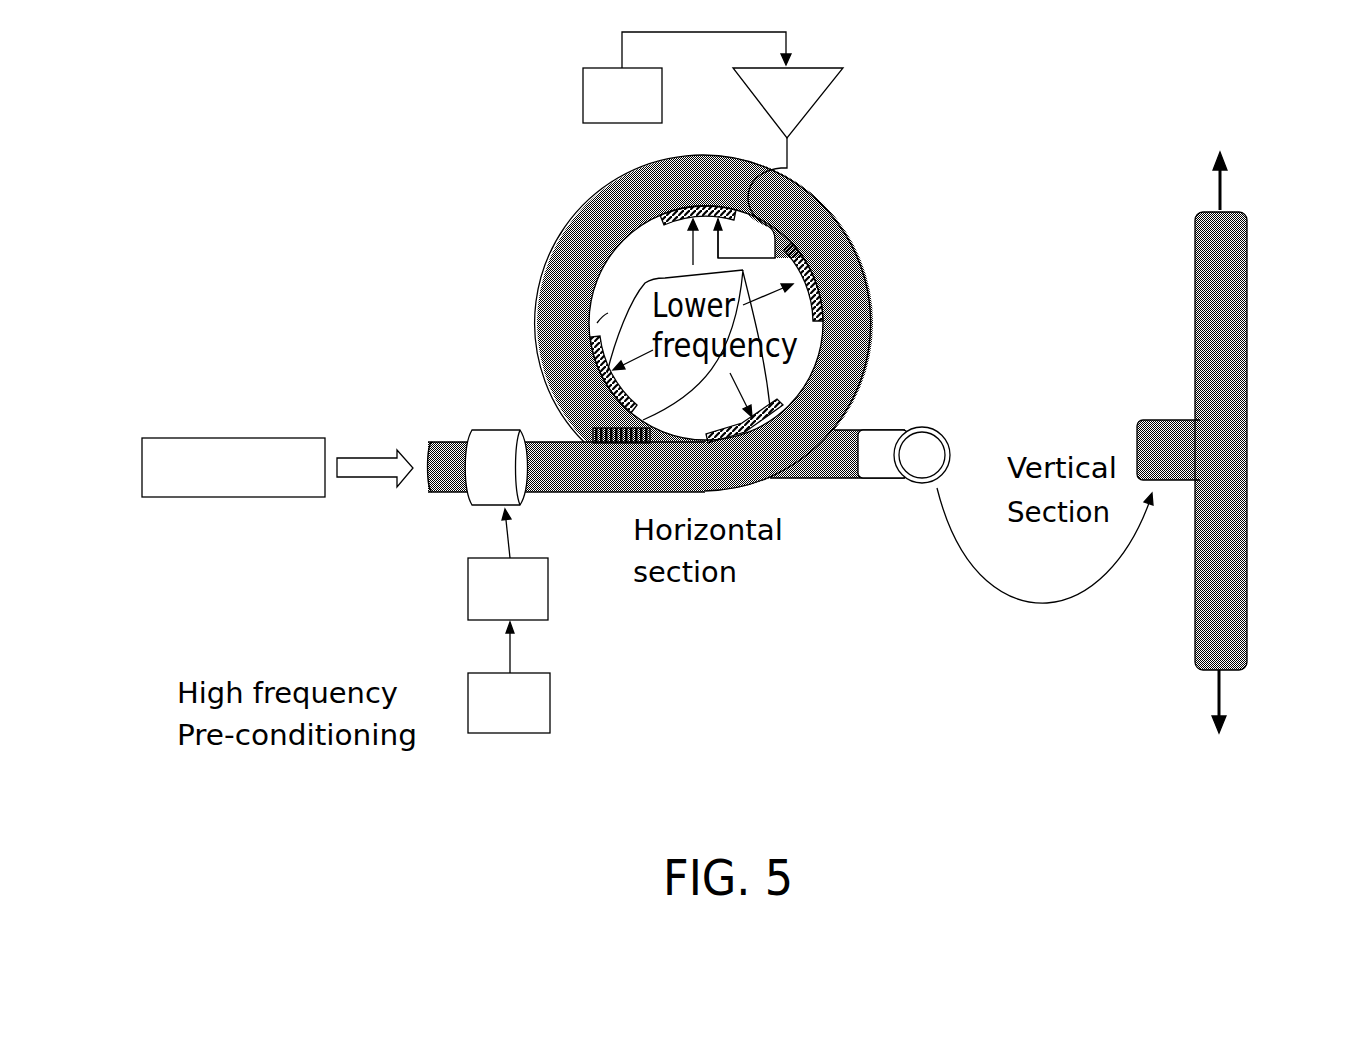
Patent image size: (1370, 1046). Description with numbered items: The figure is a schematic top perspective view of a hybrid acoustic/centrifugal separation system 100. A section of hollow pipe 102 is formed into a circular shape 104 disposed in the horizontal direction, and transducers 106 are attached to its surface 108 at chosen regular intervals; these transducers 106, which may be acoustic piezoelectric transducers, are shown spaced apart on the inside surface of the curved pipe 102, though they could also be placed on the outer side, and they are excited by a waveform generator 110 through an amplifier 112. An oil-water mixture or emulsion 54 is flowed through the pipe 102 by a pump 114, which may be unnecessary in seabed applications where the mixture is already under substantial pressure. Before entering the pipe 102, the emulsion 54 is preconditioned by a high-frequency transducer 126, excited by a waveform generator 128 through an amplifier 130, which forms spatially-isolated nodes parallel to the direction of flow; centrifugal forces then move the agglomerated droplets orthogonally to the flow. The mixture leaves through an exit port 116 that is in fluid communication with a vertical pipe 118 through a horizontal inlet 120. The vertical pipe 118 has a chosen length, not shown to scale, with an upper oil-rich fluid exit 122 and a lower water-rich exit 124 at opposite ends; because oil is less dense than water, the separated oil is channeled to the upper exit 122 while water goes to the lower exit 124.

The oil-water mixture 54 is at (358, 455).
The hybrid acoustic/centrifugal separation system 100 is at (890, 197).
The hollow pipe 102 is at (876, 287).
The circular shape 104 is at (625, 332).
The transducers 106 is at (683, 327).
The surface 108 is at (810, 343).
The waveform generator 110 is at (648, 112).
The amplifier 112 is at (807, 110).
The pump 114 is at (233, 467).
The exit port 116 is at (925, 440).
The vertical pipe 118 is at (1249, 436).
The horizontal inlet 120 is at (1137, 441).
The upper oil-rich fluid exit 122 is at (1249, 156).
The lower water-rich exit 124 is at (1250, 726).
The high-frequency transducer 126 is at (471, 508).
The waveform generator 128 is at (535, 722).
The amplifier 130 is at (535, 607).